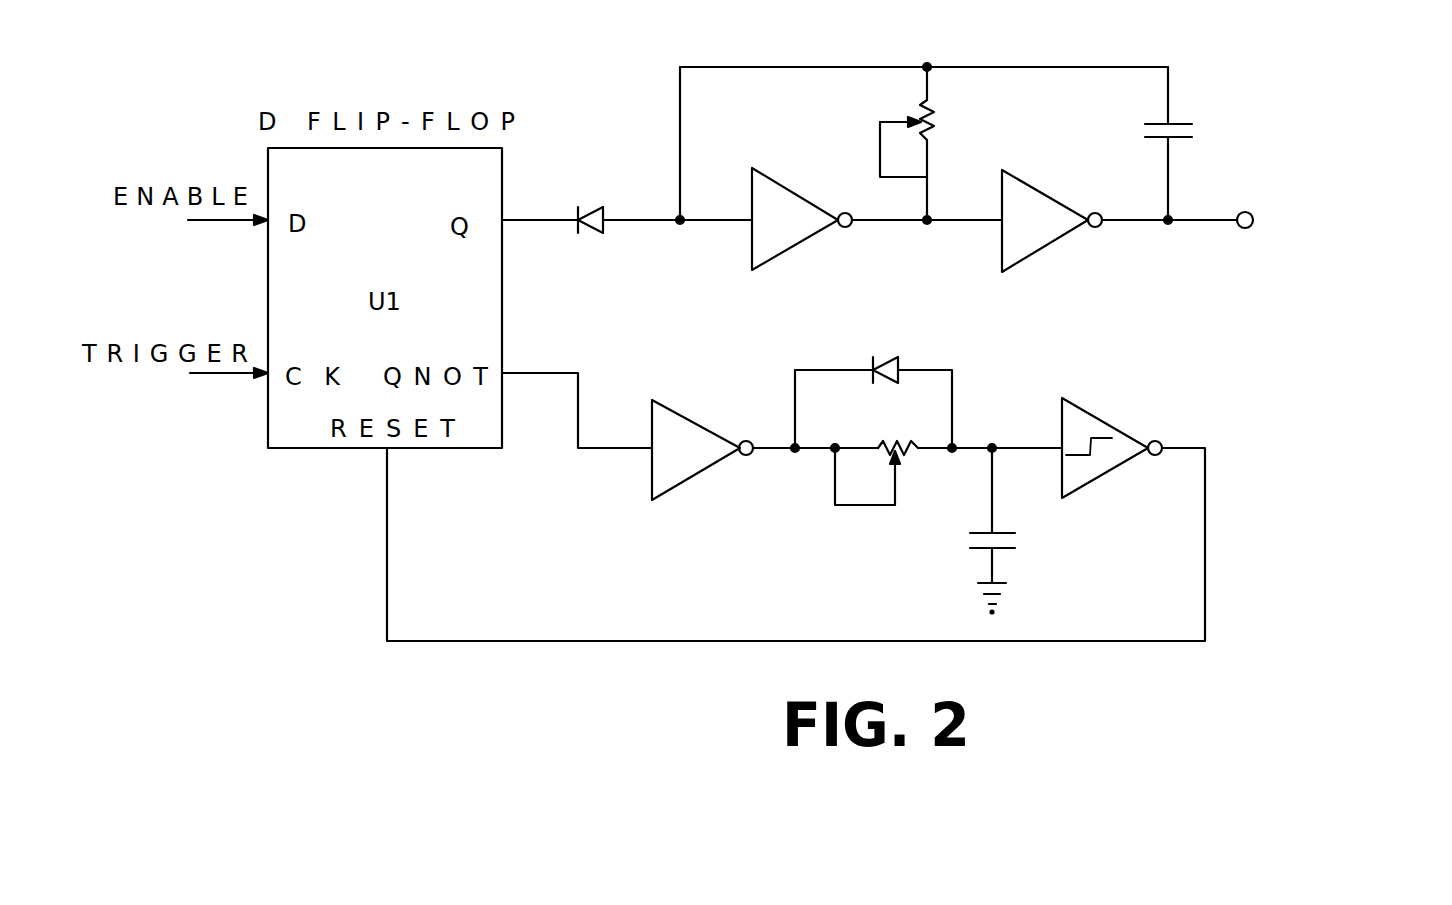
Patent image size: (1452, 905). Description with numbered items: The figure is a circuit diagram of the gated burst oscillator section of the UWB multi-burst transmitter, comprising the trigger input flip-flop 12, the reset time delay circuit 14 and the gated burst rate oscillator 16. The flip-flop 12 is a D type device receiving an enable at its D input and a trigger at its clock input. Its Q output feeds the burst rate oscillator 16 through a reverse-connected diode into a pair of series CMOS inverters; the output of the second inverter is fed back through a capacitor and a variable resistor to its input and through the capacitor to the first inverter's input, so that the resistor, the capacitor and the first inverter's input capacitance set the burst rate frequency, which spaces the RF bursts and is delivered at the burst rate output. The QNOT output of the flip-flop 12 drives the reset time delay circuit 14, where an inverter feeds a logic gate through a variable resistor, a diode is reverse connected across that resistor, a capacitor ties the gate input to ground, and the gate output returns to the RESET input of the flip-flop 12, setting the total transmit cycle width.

The trigger input flip-flop 12 is at (591, 242).
The reset time delay circuit 14 is at (1250, 483).
The gated burst rate oscillator 16 is at (1166, 38).